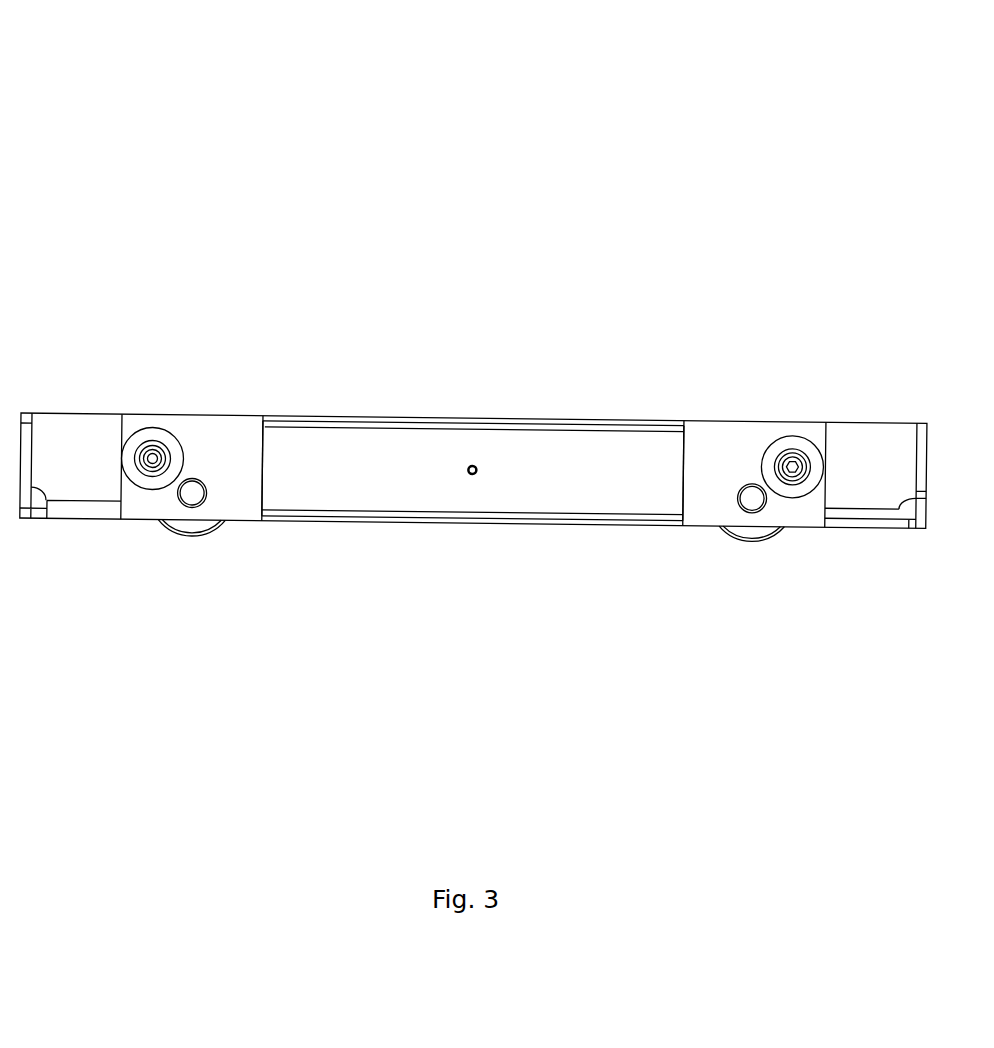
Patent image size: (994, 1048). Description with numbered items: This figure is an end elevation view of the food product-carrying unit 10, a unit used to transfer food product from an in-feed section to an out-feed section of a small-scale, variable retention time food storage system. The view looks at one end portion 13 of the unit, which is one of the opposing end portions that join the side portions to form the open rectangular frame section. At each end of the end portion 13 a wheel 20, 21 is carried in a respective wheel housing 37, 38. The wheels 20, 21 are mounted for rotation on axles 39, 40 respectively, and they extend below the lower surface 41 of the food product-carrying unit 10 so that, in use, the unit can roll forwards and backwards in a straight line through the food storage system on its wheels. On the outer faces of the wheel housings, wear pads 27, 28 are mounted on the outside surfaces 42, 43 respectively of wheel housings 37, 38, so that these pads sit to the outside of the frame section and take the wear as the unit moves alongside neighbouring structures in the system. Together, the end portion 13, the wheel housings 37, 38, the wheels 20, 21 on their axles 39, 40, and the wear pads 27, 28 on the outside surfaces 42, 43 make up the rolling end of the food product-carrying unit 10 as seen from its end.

The food product-carrying unit 10 is at (202, 153).
The end portion 13 is at (512, 443).
The wheel 20 is at (750, 535).
The wheel 21 is at (192, 523).
The wear pad 27 is at (797, 440).
The wear pad 28 is at (162, 427).
The wheel housing 37 is at (713, 442).
The wheel housing 38 is at (232, 432).
The axle 39 is at (767, 500).
The axle 40 is at (192, 498).
The lower surface 41 is at (492, 528).
The outside surface 42 is at (705, 503).
The outside surface 43 is at (247, 487).